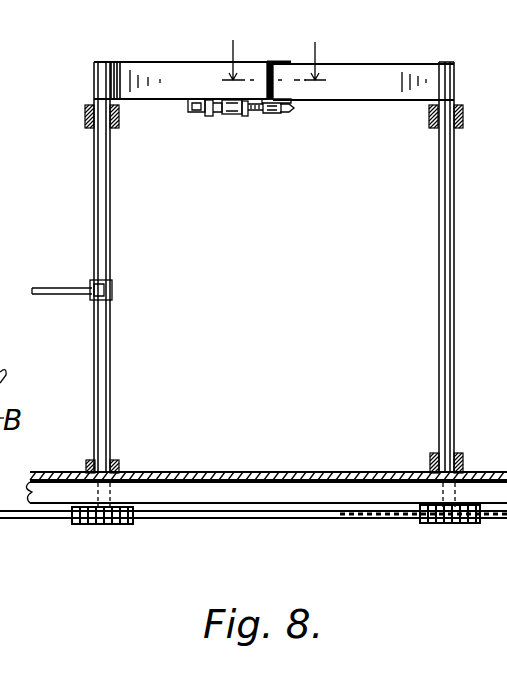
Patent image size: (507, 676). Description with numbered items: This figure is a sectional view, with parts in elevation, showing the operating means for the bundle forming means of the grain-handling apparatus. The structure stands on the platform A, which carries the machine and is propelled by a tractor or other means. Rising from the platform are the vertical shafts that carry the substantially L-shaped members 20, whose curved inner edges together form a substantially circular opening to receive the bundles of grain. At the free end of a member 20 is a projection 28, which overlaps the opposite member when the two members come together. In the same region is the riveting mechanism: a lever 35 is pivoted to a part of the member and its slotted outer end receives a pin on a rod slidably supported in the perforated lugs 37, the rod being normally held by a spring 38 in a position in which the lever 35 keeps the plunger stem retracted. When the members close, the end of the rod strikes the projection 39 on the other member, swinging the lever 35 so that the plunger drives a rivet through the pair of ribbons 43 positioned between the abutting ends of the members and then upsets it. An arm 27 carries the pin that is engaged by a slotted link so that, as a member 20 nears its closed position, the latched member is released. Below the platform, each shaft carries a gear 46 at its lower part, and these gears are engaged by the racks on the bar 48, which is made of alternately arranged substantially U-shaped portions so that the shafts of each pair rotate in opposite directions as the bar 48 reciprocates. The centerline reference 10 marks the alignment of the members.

The substantially L-shaped member 20 is at (149, 70).
The center line reference 10 is at (276, 50).
The projection 28 is at (271, 62).
The lever 35 is at (188, 107).
The perforated lug 37 is at (212, 116).
The spring 38 is at (225, 116).
The projection 39 is at (292, 112).
The ribbon 43 is at (273, 86).
The arm 27 is at (48, 291).
The platform A is at (265, 468).
The bar 48 is at (38, 522).
The gear 46 is at (94, 526).